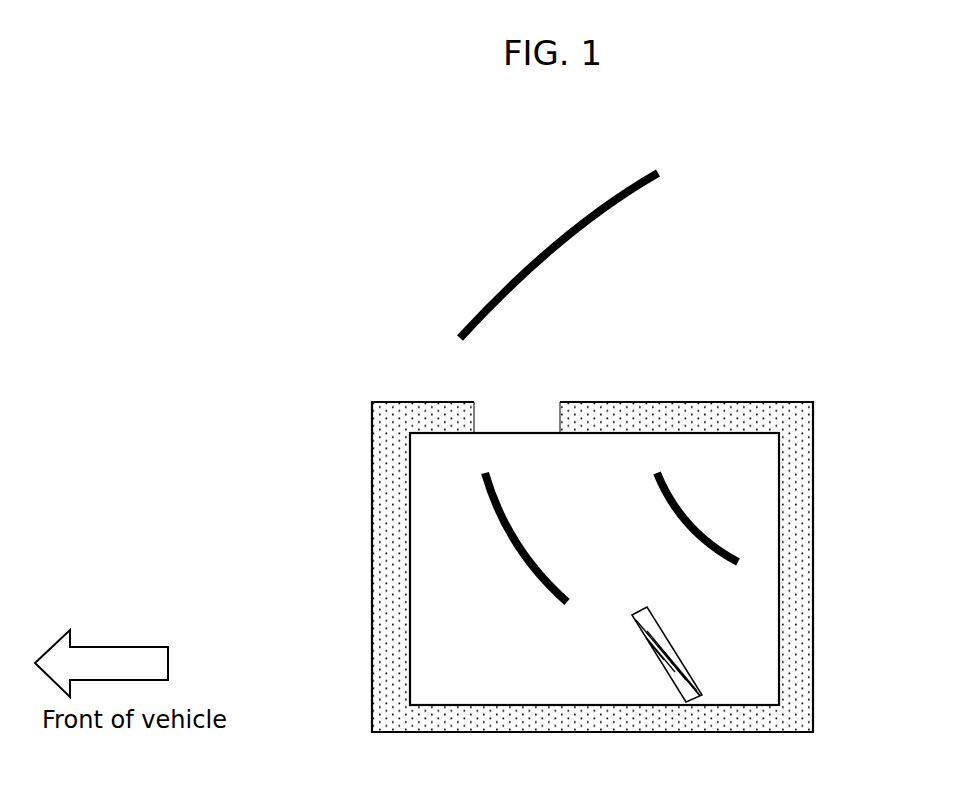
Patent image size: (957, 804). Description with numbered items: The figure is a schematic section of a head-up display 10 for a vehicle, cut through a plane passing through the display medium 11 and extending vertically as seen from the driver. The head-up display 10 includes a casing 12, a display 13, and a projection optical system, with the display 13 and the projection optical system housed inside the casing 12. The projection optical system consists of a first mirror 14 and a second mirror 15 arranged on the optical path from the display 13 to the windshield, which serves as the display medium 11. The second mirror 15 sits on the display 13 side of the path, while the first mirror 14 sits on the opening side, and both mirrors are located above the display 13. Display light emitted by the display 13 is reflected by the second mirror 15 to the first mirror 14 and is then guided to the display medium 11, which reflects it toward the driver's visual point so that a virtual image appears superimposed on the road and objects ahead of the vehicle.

The head-up display 10 is at (896, 334).
The display medium 11 is at (540, 258).
The casing 12 is at (797, 517).
The display 13 is at (685, 663).
The first mirror 14 is at (528, 575).
The second mirror 15 is at (658, 490).